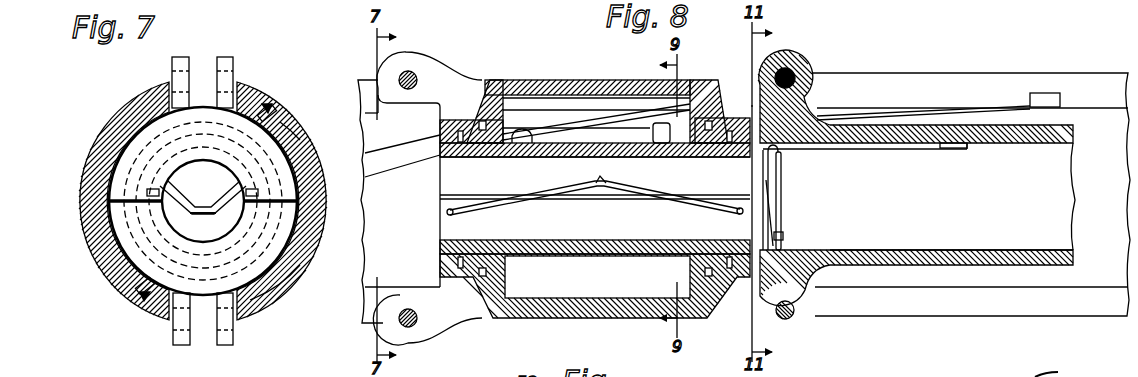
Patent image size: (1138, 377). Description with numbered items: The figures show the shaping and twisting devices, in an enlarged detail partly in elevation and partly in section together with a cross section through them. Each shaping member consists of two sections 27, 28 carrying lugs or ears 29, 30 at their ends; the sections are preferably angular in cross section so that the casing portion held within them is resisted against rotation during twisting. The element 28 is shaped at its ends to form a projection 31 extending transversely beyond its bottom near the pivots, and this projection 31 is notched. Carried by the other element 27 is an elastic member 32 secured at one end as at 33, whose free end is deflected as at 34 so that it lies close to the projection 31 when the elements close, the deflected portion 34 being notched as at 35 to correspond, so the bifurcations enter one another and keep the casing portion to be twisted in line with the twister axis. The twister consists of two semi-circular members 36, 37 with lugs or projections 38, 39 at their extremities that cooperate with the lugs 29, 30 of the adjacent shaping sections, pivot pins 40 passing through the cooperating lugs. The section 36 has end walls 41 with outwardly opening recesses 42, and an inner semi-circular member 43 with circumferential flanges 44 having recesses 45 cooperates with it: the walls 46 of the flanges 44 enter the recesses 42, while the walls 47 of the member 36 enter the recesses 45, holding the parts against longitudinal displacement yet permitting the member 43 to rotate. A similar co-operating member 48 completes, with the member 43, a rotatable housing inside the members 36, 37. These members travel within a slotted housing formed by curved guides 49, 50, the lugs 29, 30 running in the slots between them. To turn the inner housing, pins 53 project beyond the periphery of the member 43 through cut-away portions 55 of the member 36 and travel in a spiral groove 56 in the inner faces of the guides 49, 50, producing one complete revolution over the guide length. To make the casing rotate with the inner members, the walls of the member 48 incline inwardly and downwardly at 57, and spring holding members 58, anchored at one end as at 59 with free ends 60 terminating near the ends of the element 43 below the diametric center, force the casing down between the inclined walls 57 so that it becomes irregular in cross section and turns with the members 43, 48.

In FIG. 8, the shaping member section 27 is at (1060, 132).
In FIG. 8, the shaping member section 28 is at (1028, 265).
In FIG. 8, the lug or ear 29 is at (808, 64).
In FIG. 8, the lug or ear 30 is at (812, 328).
In FIG. 8, the projection 31 is at (784, 236).
In FIG. 8, the elastic member 32 is at (862, 143).
In FIG. 8, the securing point 33 is at (948, 150).
In FIG. 8, the deflected portion 34 is at (782, 175).
In FIG. 8, the notch 35 is at (766, 180).
In FIG. 7, the semi-circular twister member 36 is at (125, 165).
In FIG. 8, the semi-circular twister member 36 is at (548, 82).
In FIG. 7, the semi-circular twister member 37 is at (267, 260).
In FIG. 8, the semi-circular twister member 37 is at (522, 318).
In FIG. 7, the lug or projection 38 is at (190, 62).
In FIG. 8, the lug or projection 38 is at (424, 66).
In FIG. 7, the lower pivot lug 39 is at (174, 335).
In FIG. 8, the lower pivot lug 39 is at (440, 322).
In FIG. 8, the pivot pin 40 is at (400, 75).
In FIG. 8, the end wall 41 is at (498, 108).
In FIG. 8, the recess 42 is at (490, 92).
In FIG. 8, the semi-circular member 43 is at (520, 158).
In FIG. 8, the circumferential flange 44 is at (452, 128).
In FIG. 8, the recess 45 is at (443, 158).
In FIG. 7, the wall 46 is at (131, 262).
In FIG. 8, the wall 46 is at (482, 122).
In FIG. 8, the wall 47 is at (468, 158).
In FIG. 7, the co-operating member 48 is at (280, 243).
In FIG. 8, the co-operating member 48 is at (604, 240).
In FIG. 7, the guide 49 is at (96, 150).
In FIG. 8, the guide 49 is at (377, 122).
In FIG. 7, the guide 50 is at (293, 128).
In FIG. 7, the pin or projection 53 is at (272, 110).
In FIG. 8, the pin or projection 53 is at (640, 120).
In FIG. 7, the cut-away portion 55 is at (240, 265).
In FIG. 8, the cut-away portion 55 is at (562, 100).
In FIG. 7, the groove or guideway 56 is at (270, 103).
In FIG. 8, the groove or guideway 56 is at (580, 128).
In FIG. 7, the inclined wall 57 is at (163, 213).
In FIG. 7, the holding member 58 is at (188, 197).
In FIG. 8, the holding member 58 is at (548, 192).
In FIG. 7, the anchored end 59 is at (246, 188).
In FIG. 8, the anchored end 59 is at (598, 182).
In FIG. 7, the free end 60 is at (203, 224).
In FIG. 8, the free end 60 is at (448, 213).